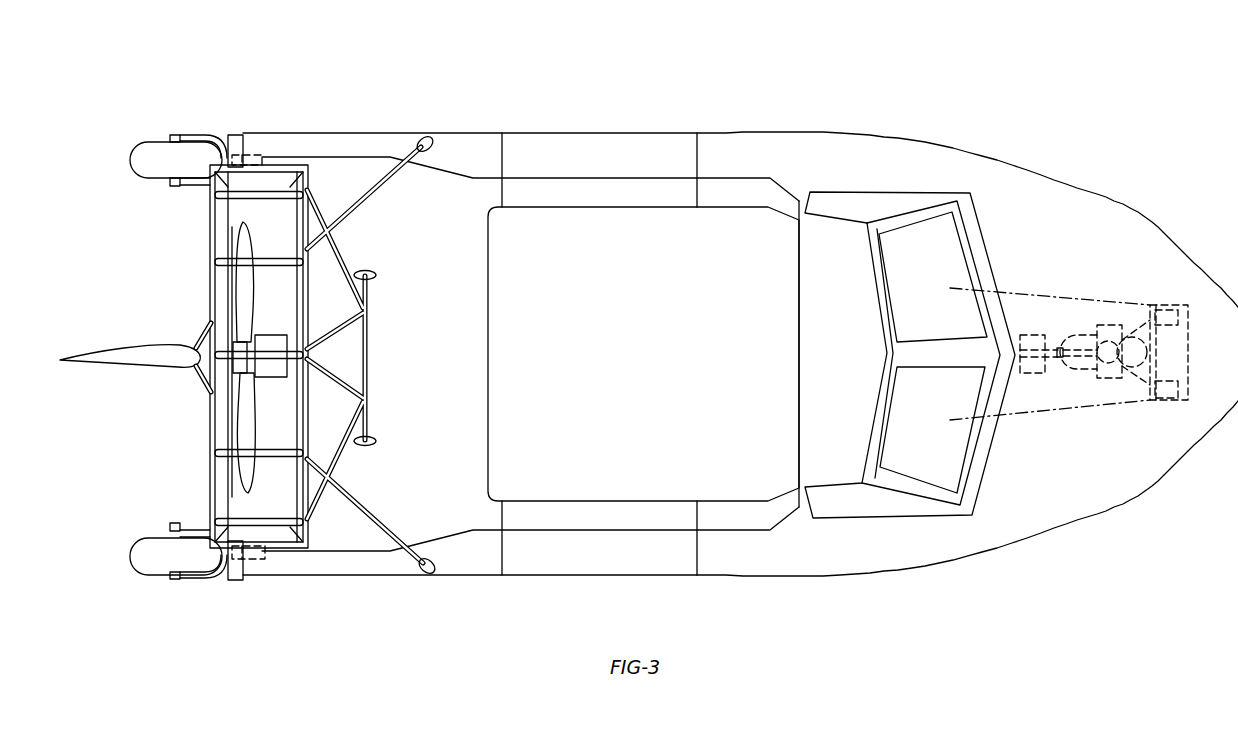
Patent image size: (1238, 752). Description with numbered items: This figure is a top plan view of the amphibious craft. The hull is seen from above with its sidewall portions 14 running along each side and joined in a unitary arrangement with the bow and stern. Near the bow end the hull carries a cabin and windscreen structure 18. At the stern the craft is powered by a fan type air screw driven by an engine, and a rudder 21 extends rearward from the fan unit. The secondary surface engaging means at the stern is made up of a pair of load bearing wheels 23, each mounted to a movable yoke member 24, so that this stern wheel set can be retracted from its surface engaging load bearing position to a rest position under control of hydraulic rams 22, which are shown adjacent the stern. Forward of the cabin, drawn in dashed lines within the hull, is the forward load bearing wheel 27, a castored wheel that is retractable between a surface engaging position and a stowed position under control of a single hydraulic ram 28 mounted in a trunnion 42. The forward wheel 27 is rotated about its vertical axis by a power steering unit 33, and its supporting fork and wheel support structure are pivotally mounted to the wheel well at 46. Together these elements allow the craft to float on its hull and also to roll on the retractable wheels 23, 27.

The sidewall portions 14 is at (608, 133).
The cabin and windscreen structure 18 is at (910, 355).
The rudder 21 is at (125, 368).
The hydraulic rams 22 is at (239, 152).
The load bearing wheels 23 is at (132, 163).
The movable yoke member 24 is at (198, 137).
The forward load bearing wheel 27 is at (1080, 368).
The hydraulic ram 28 is at (972, 378).
The power steering unit 33 is at (1094, 352).
The trunnion 42 is at (1035, 330).
The pivotal mounting 46 is at (1160, 305).